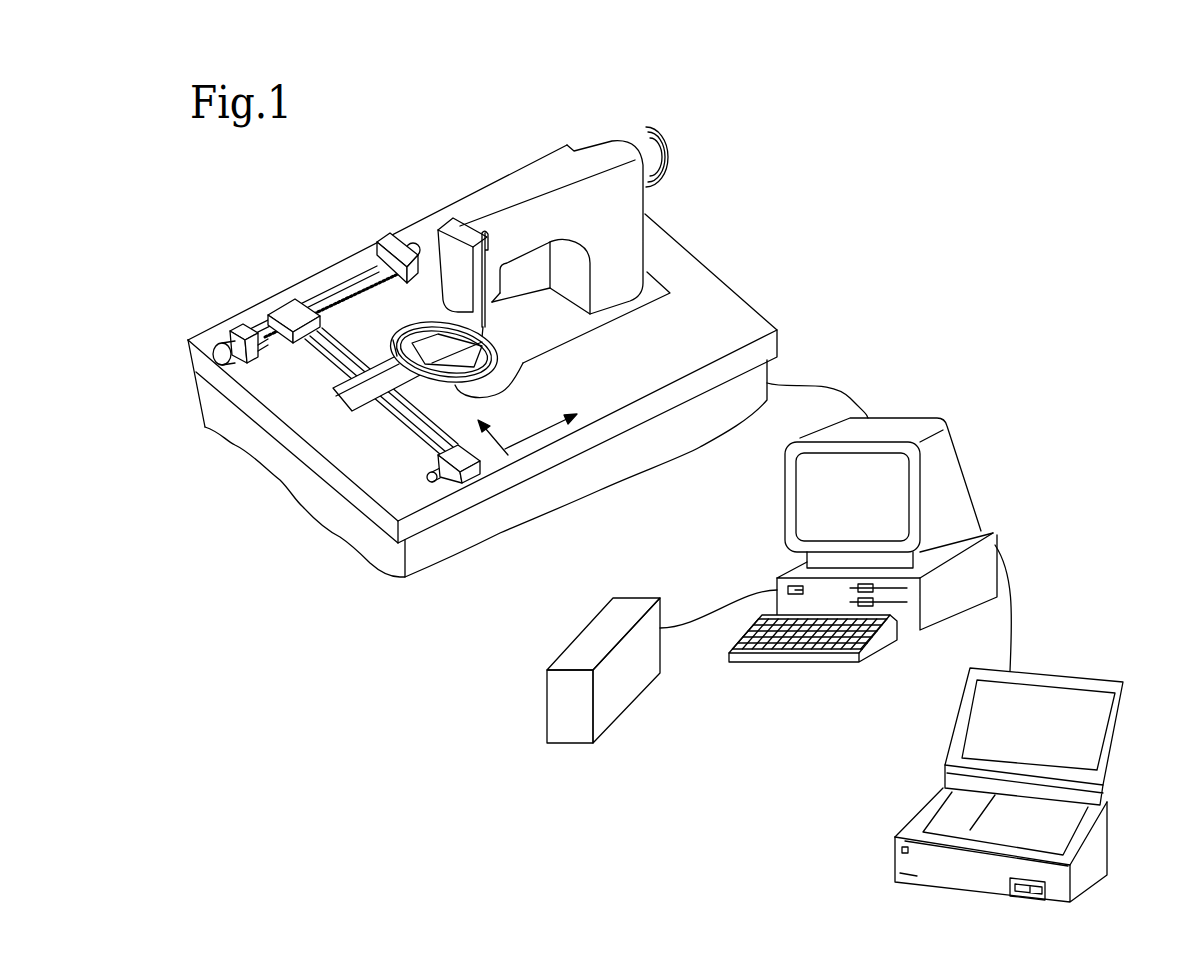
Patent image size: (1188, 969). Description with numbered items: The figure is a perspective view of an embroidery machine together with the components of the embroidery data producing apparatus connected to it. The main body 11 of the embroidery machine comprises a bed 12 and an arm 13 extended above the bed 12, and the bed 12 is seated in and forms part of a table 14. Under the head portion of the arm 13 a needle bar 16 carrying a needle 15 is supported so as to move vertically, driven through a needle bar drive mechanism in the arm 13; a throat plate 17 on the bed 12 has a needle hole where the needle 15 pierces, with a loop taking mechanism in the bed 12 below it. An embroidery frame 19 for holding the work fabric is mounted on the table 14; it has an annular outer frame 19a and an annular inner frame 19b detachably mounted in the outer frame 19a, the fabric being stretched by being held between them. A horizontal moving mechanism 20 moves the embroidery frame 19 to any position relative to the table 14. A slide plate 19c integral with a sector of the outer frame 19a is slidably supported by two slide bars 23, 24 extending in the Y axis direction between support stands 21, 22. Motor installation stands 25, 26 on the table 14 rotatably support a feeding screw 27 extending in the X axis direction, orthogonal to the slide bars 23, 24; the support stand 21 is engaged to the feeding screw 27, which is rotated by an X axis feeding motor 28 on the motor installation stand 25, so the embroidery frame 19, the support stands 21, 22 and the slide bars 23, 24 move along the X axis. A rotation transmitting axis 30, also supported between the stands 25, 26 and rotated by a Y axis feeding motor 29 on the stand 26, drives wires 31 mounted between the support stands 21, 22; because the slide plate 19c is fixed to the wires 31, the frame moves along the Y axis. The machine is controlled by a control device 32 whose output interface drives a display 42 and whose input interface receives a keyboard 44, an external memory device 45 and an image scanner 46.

The main body 11 is at (554, 201).
The bed 12 is at (563, 330).
The arm 13 is at (518, 195).
The table 14 is at (693, 270).
The needle 15 is at (495, 343).
The needle bar 16 is at (488, 314).
The throat plate 17 is at (470, 388).
The embroidery frame 19 is at (459, 377).
The outer frame 19a is at (398, 334).
The inner frame 19b is at (461, 362).
The slide plate 19c is at (343, 398).
The horizontal moving mechanism 20 is at (372, 345).
The support stand 21 is at (287, 310).
The support stand 22 is at (462, 463).
The slide bar 23 is at (403, 433).
The slide bar 24 is at (438, 438).
The motor installation stand 25 is at (246, 365).
The motor installation stand 26 is at (388, 245).
The feeding screw 27 is at (351, 296).
The X axis feeding motor 28 is at (231, 332).
The Y axis feeding motor 29 is at (408, 242).
The rotation transmitting axis 30 is at (322, 292).
The wires 31 is at (347, 347).
The control device 32 is at (987, 532).
The display 42 is at (893, 462).
The keyboard 44 is at (810, 665).
The external memory device 45 is at (618, 693).
The image scanner 46 is at (1098, 834).